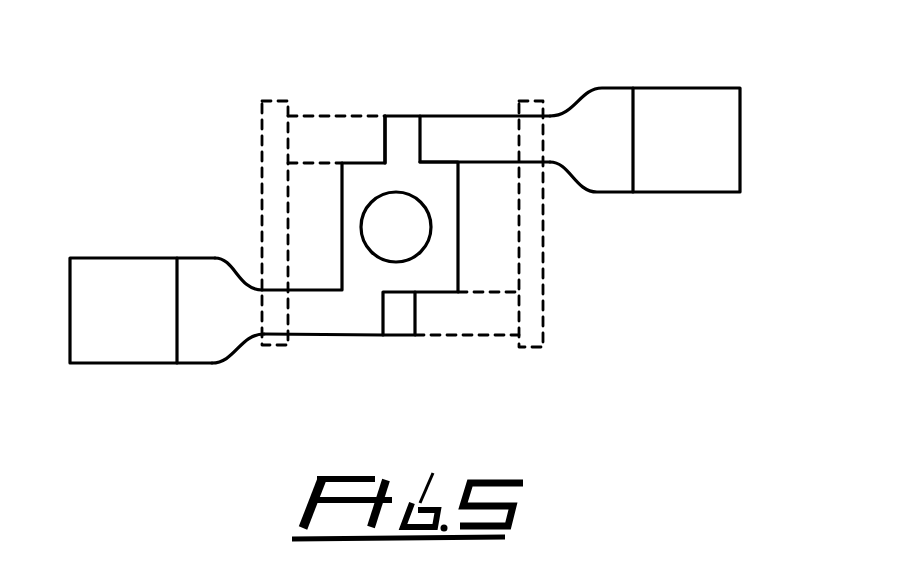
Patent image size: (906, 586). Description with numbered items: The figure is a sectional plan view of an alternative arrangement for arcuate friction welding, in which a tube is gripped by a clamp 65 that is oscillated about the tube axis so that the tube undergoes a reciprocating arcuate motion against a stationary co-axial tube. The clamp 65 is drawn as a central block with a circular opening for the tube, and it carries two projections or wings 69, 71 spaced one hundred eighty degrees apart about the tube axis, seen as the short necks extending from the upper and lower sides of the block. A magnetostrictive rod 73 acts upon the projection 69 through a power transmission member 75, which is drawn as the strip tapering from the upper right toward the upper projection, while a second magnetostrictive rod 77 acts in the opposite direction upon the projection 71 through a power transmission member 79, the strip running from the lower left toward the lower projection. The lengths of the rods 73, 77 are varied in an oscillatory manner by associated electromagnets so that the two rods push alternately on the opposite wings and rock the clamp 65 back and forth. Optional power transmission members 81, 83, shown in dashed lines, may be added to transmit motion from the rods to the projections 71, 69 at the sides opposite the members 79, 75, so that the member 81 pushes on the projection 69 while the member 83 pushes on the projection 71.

The clamp 65 is at (374, 160).
The projection 69 is at (403, 128).
The projection 71 is at (399, 336).
The magnetostrictive rod 73 is at (706, 103).
The power transmission member 75 is at (607, 95).
The magnetostrictive rod 77 is at (138, 330).
The power transmission member 79 is at (223, 323).
The optional power transmission member 81 is at (534, 255).
The optional power transmission member 83 is at (272, 183).